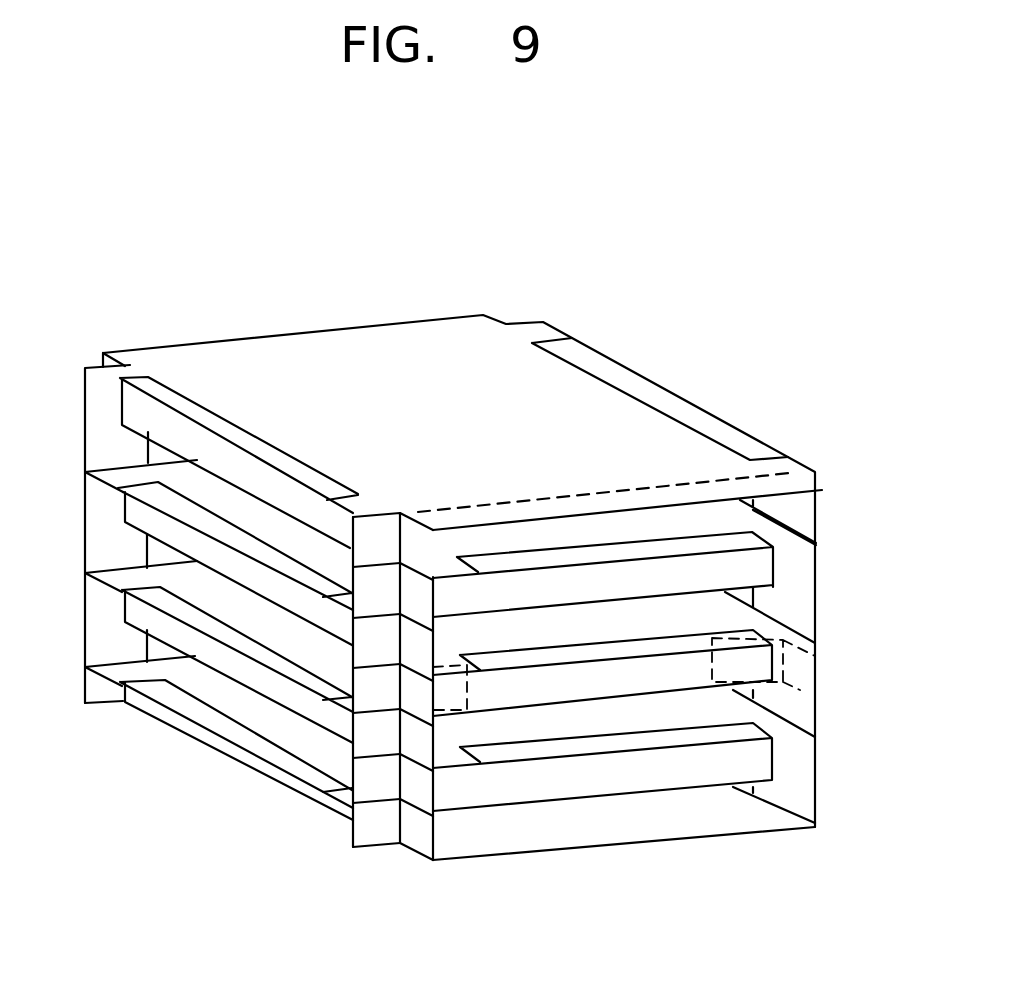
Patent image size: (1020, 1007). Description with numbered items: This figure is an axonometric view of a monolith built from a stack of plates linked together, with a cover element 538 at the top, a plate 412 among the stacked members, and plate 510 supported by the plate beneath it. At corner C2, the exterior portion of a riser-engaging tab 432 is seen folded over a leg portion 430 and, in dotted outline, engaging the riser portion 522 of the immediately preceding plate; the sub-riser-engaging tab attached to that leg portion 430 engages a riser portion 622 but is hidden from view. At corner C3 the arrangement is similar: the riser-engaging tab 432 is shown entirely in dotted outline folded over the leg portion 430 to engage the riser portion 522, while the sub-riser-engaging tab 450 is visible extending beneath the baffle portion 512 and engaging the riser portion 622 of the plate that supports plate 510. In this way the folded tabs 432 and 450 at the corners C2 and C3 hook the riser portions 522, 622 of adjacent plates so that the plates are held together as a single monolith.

The top cover plate 538 is at (558, 282).
The riser-engaging tab 432 is at (417, 690).
The leg portion 430 is at (428, 746).
The sub-riser-engaging tab 450 is at (783, 705).
The plate 412 is at (603, 588).
The riser portion 522 is at (602, 673).
The riser portion 622 is at (733, 698).
The plate 510 is at (190, 589).
The baffle portion 512 is at (195, 602).
The corner C3 is at (817, 442).
The corner C2 is at (402, 878).